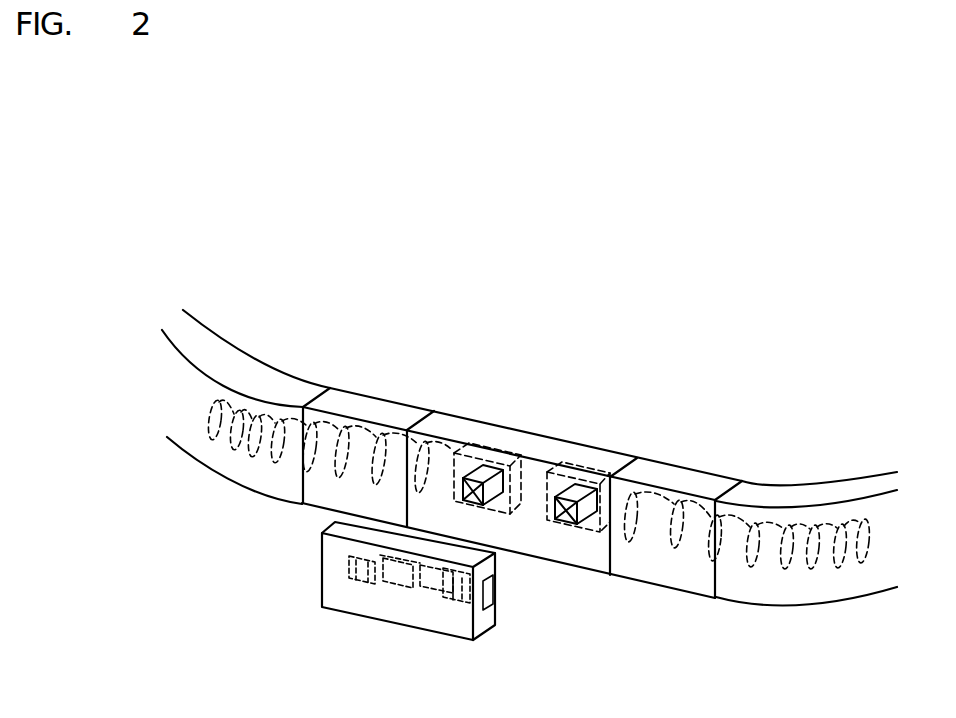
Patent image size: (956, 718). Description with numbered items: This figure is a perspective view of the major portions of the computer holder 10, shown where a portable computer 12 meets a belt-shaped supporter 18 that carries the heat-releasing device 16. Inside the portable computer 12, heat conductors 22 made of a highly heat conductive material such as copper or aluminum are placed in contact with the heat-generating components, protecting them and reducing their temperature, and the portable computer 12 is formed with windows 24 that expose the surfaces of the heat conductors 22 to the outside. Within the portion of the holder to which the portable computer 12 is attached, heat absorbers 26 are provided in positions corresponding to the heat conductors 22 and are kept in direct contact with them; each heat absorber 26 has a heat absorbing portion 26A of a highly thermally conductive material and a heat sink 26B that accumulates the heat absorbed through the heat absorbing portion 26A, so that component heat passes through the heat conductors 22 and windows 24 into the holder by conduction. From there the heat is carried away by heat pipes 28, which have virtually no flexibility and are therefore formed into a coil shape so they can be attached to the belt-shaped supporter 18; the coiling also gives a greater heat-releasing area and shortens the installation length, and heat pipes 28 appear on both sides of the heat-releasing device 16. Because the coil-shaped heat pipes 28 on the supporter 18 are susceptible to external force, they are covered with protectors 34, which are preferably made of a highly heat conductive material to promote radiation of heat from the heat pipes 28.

The computer holder 10 is at (758, 334).
The portable computer 12 is at (397, 625).
The heat-releasing device 16 is at (394, 386).
The supporter 18 is at (813, 482).
The heat conductor 22 is at (343, 577).
The window 24 is at (365, 550).
The heat absorber 26 is at (457, 452).
The heat absorbing portion 26A is at (466, 481).
The heat sink 26B is at (500, 462).
The heat pipe 28 is at (243, 395).
The protector 34 is at (227, 472).